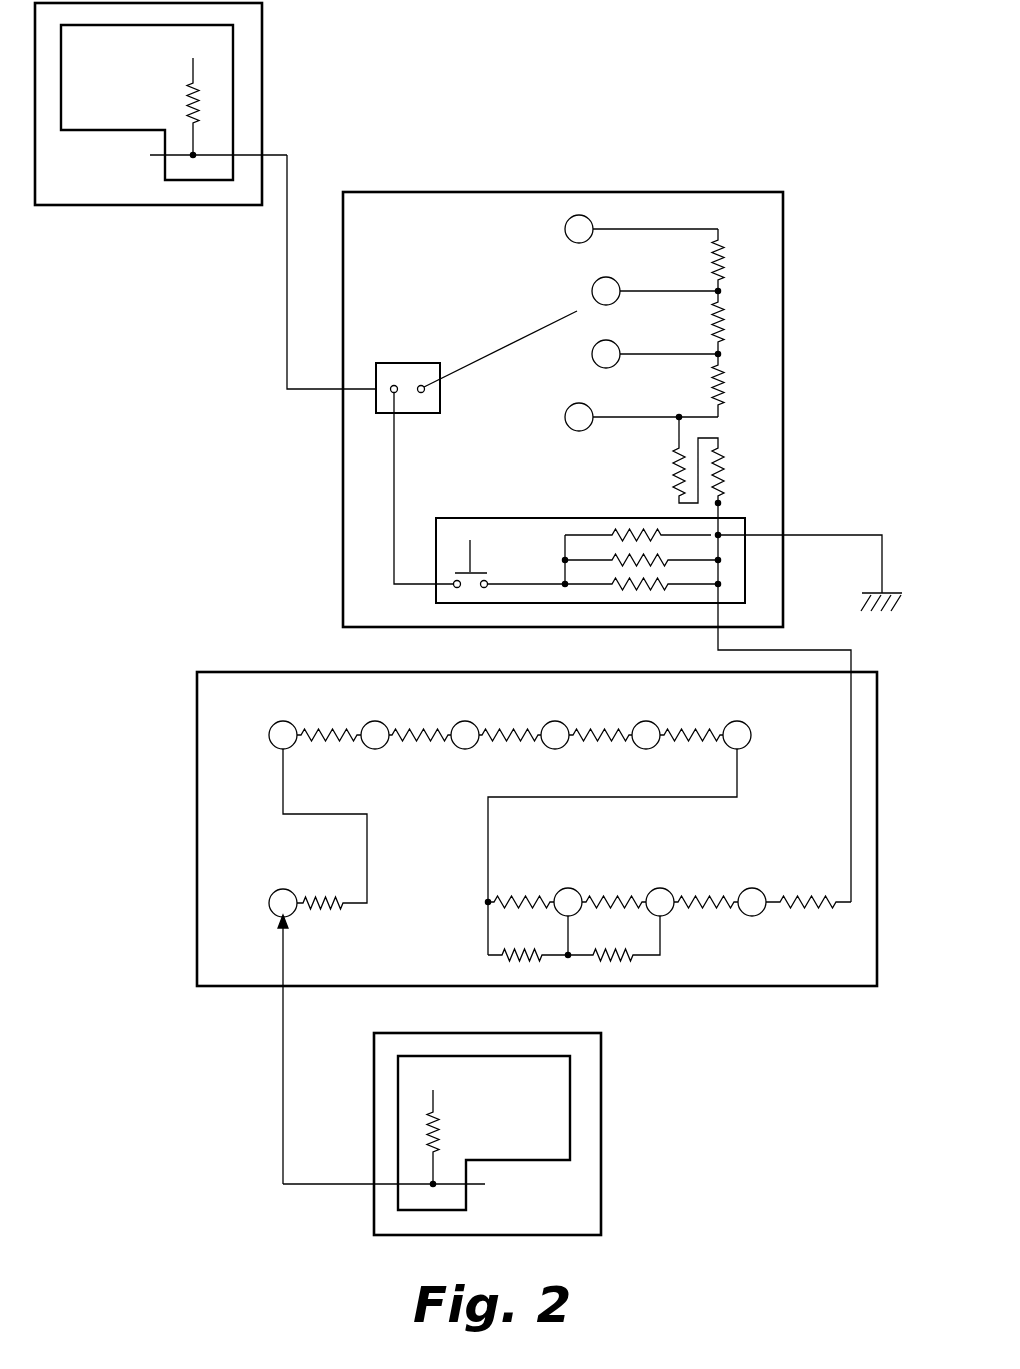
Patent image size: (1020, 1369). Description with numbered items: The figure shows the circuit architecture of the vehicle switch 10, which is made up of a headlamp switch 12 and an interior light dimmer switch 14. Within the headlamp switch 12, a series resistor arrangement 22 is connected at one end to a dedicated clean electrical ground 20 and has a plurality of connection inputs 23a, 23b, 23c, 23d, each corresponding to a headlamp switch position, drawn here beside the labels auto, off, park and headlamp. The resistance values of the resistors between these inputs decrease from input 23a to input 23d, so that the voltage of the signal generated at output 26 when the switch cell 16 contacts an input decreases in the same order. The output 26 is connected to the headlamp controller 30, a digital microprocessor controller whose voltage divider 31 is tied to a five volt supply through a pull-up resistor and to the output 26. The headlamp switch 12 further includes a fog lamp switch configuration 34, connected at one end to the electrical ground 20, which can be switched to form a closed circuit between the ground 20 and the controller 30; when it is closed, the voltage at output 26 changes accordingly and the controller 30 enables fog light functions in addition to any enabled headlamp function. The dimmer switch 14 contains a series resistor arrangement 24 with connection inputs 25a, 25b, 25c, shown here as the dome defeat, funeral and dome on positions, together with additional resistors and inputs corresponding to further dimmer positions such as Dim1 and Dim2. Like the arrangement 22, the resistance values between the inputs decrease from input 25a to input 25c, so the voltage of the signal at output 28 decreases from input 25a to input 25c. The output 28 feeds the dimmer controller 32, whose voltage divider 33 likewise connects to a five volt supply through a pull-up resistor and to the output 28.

The vehicle switch 10 is at (459, 109).
The headlamp switch 12 is at (342, 507).
The interior light dimmer switch 14 is at (758, 988).
The switch cell 16 is at (394, 363).
The electrical ground 20 is at (848, 535).
The series resistor arrangement 22 is at (741, 263).
The connection input 23a is at (566, 240).
The connection input 23b is at (618, 282).
The connection input 23c is at (618, 346).
The connection input 23d is at (567, 405).
The series resistor arrangement 24 is at (405, 768).
The connection input 25a is at (296, 912).
The connection input 25b is at (578, 912).
The connection input 25c is at (670, 912).
The output 26 is at (322, 393).
The output 28 is at (282, 1074).
The headlamp controller 30 is at (263, 22).
The voltage divider 31 is at (233, 93).
The dimmer controller 32 is at (601, 1157).
The voltage divider 33 is at (570, 1090).
The fog lamp switch configuration 34 is at (488, 518).